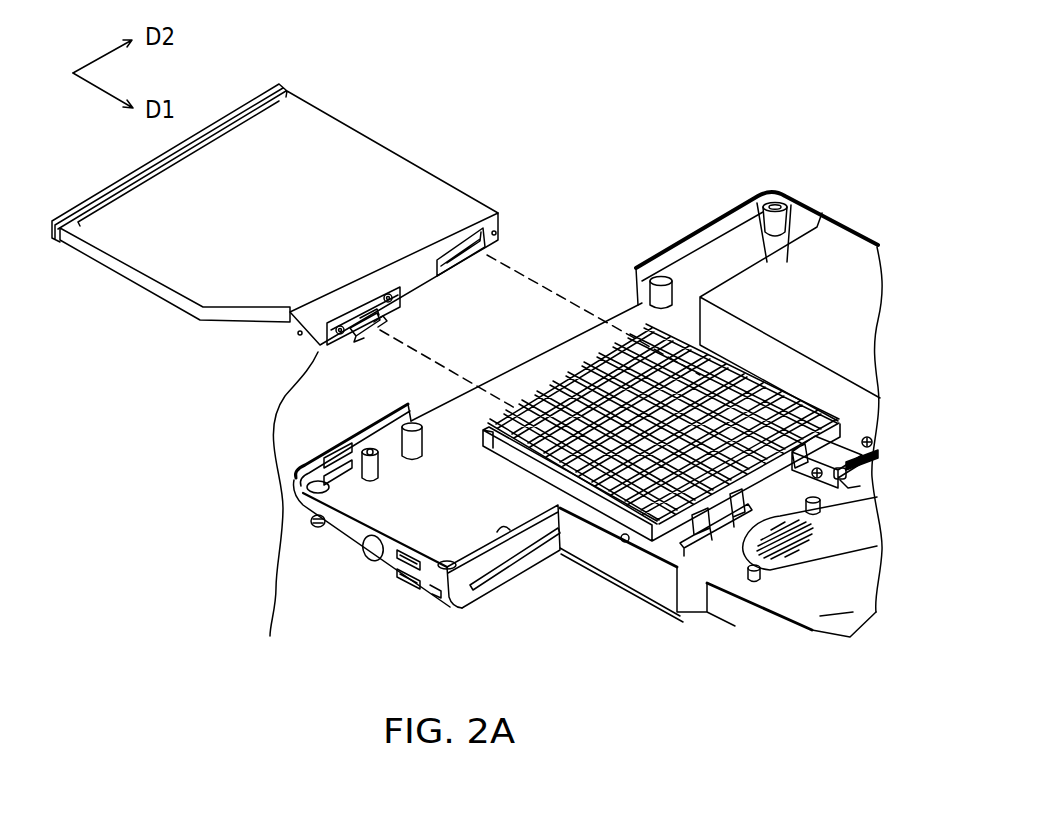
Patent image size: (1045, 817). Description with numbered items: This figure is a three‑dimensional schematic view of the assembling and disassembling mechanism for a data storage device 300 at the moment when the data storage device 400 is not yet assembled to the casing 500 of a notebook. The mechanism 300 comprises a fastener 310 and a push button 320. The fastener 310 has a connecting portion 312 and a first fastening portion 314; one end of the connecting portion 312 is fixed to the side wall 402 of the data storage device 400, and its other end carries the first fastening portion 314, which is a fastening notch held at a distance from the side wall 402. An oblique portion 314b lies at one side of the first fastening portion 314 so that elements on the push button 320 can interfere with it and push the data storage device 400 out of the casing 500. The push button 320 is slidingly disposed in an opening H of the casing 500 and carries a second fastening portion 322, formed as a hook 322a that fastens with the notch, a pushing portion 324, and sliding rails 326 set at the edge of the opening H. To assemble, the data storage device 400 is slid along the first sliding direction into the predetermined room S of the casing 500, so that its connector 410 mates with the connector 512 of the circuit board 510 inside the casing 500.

The assembling and disassembling mechanism for a data storage device 300 is at (390, 688).
The fastener 310 is at (407, 505).
The connecting portion 312 is at (353, 337).
The first fastening portion 314 is at (362, 338).
The oblique portion 314b is at (378, 328).
The push button 320 is at (617, 470).
The second fastening portion 322 is at (720, 548).
The hook 322a is at (705, 548).
The pushing portion 324 is at (738, 508).
The sliding rails 326 is at (742, 575).
The data storage device 400 is at (309, 250).
The side wall 402 is at (420, 280).
The connector 410 is at (483, 227).
The casing 500 is at (788, 328).
The circuit board 510 is at (850, 488).
The connector 512 is at (840, 425).
The predetermined room S is at (640, 368).
The opening H is at (508, 578).